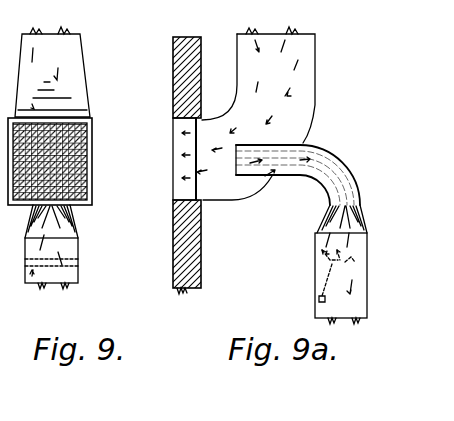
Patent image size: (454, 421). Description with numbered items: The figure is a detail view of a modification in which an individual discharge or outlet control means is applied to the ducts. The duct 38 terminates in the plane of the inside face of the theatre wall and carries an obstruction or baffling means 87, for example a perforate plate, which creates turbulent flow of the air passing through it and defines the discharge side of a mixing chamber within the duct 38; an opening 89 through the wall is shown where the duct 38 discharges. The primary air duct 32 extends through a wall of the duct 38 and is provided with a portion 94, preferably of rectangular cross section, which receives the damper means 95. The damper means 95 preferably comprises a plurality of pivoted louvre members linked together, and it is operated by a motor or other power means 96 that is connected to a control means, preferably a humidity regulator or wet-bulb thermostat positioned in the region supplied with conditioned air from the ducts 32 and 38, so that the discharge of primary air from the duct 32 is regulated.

In FIG. 9, the primary air duct 32 is at (66, 224).
In FIG. 9A, the primary air duct 32 is at (347, 190).
In FIG. 9, the duct 38 is at (70, 62).
In FIG. 9A, the duct 38 is at (303, 62).
In FIG. 9A, the baffling means 87 is at (205, 135).
In FIG. 9, the screen / air inlet 89 is at (92, 132).
In FIG. 9A, the screen / air inlet 89 is at (172, 150).
In FIG. 9A, the portion 94 is at (358, 295).
In FIG. 9, the damper means 95 is at (66, 252).
In FIG. 9A, the damper means 95 is at (334, 263).
In FIG. 9A, the motor 96 is at (318, 299).